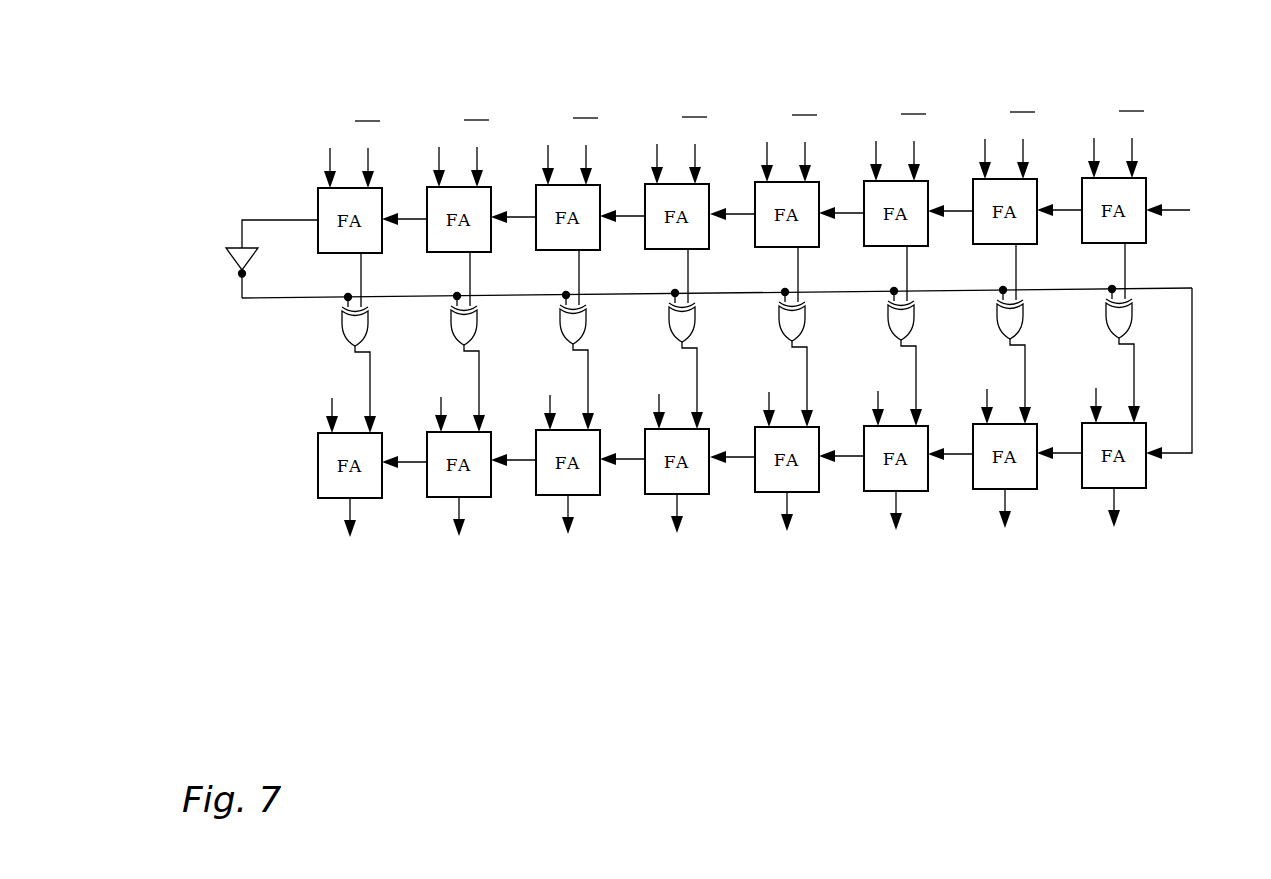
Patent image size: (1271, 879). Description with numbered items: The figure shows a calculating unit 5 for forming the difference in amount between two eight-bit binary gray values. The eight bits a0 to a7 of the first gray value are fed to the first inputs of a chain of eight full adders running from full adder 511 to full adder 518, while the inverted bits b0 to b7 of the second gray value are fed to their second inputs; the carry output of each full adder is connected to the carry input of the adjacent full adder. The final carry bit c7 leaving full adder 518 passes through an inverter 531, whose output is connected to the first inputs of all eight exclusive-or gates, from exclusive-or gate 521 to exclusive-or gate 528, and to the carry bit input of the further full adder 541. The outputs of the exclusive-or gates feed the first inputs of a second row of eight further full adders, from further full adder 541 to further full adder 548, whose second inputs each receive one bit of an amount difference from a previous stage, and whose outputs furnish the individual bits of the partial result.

The adder circuit 5 is at (1230, 82).
The full adder 511 is at (1147, 190).
The full adder 518 is at (318, 200).
The exclusive-or gate 521 is at (1128, 322).
The exclusive-or gate 528 is at (342, 333).
The inverter 531 is at (233, 258).
The further full adder 541 is at (1147, 480).
The further full adder 548 is at (318, 490).